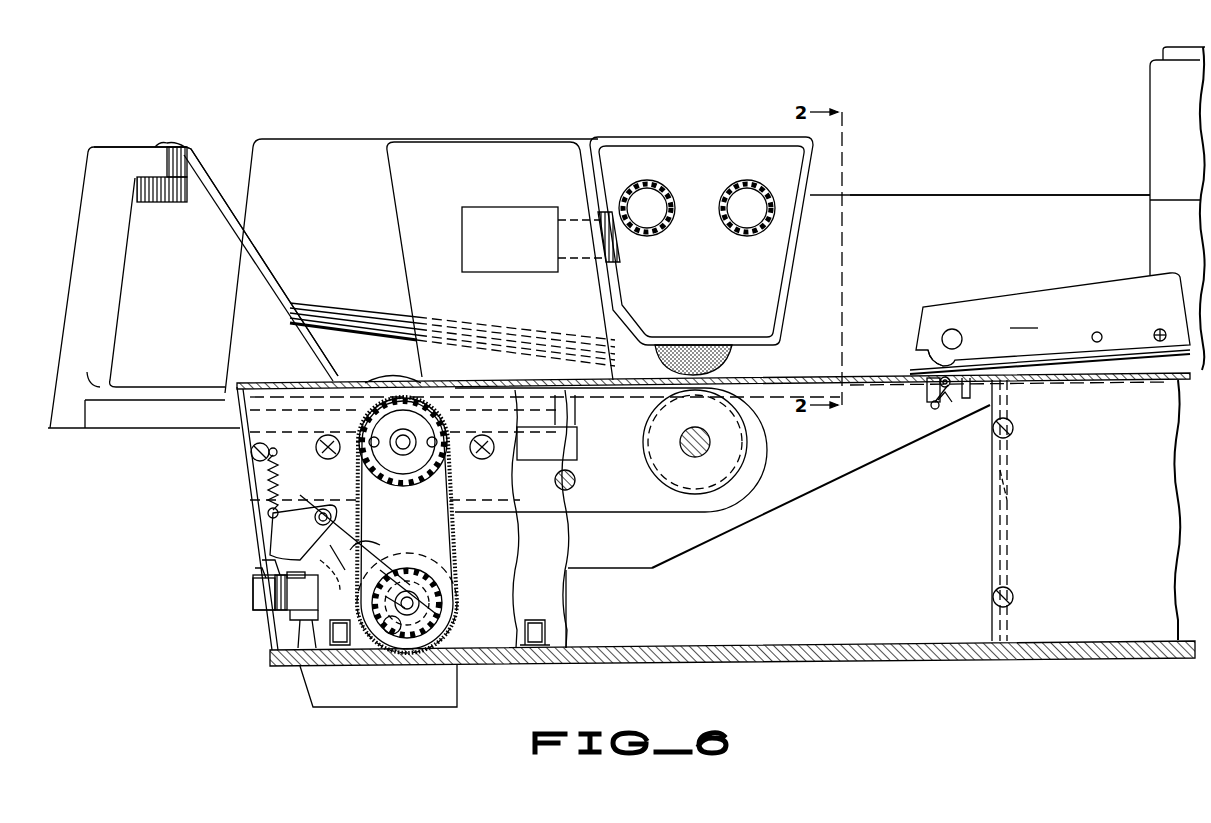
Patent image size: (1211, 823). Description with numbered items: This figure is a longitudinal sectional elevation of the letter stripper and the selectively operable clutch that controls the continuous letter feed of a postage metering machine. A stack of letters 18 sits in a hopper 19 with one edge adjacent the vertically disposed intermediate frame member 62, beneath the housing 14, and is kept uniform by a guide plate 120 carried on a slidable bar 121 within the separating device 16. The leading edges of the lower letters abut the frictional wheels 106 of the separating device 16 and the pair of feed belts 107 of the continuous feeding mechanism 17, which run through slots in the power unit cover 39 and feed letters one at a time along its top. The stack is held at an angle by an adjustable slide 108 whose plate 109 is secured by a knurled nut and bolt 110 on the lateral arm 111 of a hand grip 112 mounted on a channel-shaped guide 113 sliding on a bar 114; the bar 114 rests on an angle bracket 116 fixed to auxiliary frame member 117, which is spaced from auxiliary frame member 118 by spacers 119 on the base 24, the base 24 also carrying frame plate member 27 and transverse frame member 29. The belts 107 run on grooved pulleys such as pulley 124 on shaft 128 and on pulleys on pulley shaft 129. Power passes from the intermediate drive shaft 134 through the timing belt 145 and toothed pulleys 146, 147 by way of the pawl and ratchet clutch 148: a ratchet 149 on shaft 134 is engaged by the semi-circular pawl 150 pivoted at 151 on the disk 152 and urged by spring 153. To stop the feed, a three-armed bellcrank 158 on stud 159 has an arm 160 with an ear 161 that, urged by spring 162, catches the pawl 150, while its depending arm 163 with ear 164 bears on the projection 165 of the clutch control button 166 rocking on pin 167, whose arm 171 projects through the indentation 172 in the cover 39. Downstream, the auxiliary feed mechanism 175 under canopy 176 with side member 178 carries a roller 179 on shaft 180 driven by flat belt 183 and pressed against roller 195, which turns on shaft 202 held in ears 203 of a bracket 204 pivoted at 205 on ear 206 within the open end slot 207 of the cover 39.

The housing 14 is at (1158, 120).
The workpiece separating device 16 is at (692, 128).
The continuous workpiece feeding mechanism 17 is at (388, 370).
The letters 18 is at (330, 312).
The hopper 19 is at (336, 150).
The base 24 is at (1075, 646).
The frame plate member 27 is at (1015, 542).
The transverse frame member 29 is at (1005, 490).
The power unit cover 39 is at (1098, 380).
The intermediate frame member 62 is at (934, 194).
The frictional wheels 106 is at (733, 357).
The feed belts 107 is at (757, 453).
The adjustable slide 108 is at (172, 130).
The plate 109 is at (257, 253).
The knurled nut and bolt 110 is at (173, 195).
The laterally formed arm 111 is at (132, 155).
The hand grip 112 is at (107, 298).
The guide 113 is at (140, 420).
The bar 114 is at (565, 411).
The angle bracket 116 is at (565, 447).
The auxiliary frame member 117 is at (556, 604).
The auxiliary frame member 118 is at (508, 539).
The spacers 119 is at (555, 480).
The guide plate 120 is at (500, 150).
The bar 121 is at (618, 250).
The grooved pulley 124 is at (720, 465).
The shaft 128 is at (695, 428).
The pulley shaft 129 is at (408, 440).
The intermediate drive shaft 134 is at (418, 612).
The timing belt 145 is at (455, 548).
The toothed pulley 146 is at (380, 425).
The toothed pulley 147 is at (428, 612).
The pawl and ratchet clutch 148 is at (440, 600).
The ratchet 149 is at (440, 620).
The semi-circular pawl 150 is at (385, 598).
The pivot 151 is at (392, 635).
The disk 152 is at (448, 582).
The spring 153 is at (420, 600).
The three-armed bellcrank 158 is at (342, 508).
The stud 159 is at (290, 505).
The arm 160 is at (378, 538).
The ear 161 is at (418, 560).
The spring 162 is at (262, 483).
The depending arm 163 is at (335, 553).
The ear 164 is at (338, 566).
The projection 165 is at (295, 592).
The clutch control button 166 is at (250, 616).
The pin 167 is at (265, 565).
The arm 171 is at (262, 603).
The indentation 172 is at (270, 575).
The auxiliary feed mechanism 175 is at (1036, 304).
The canopy 176 is at (1097, 290).
The side member 178 is at (1024, 317).
The roller 179 is at (928, 355).
The shaft 180 is at (958, 334).
The flat belt 183 is at (1100, 352).
The roller 195 is at (962, 398).
The shaft 202 is at (950, 378).
The ears 203 is at (955, 392).
The bracket 204 is at (940, 410).
The pivot 205 is at (927, 392).
The ear 206 is at (931, 405).
The open end slot 207 is at (985, 380).